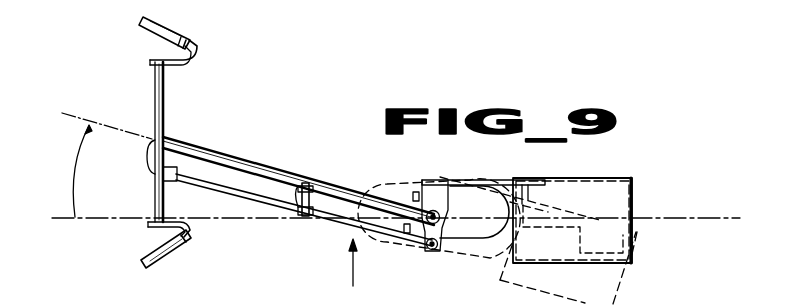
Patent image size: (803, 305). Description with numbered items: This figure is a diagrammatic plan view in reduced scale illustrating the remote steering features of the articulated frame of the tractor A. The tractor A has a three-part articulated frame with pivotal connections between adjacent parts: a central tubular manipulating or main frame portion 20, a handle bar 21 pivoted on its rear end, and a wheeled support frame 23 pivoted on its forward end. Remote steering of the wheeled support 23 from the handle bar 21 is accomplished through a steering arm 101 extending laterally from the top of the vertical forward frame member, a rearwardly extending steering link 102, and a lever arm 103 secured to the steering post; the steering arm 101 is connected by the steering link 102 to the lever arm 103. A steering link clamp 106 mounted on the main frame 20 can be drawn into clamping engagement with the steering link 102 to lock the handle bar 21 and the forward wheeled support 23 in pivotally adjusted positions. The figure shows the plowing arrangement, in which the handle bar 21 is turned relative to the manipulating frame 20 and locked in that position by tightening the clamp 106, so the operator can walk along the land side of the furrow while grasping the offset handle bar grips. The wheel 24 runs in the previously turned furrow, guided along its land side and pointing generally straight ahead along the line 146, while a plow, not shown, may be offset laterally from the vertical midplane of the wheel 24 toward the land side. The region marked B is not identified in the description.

The main frame portion 20 is at (217, 154).
The handle bar 21 is at (164, 100).
The wheeled support frame 23 is at (419, 184).
The wheel 24 is at (379, 246).
The steering arm 101 is at (441, 256).
The steering link 102 is at (336, 221).
The lever arm 103 is at (149, 157).
The steering link clamp 106 is at (303, 182).
The line 146 is at (672, 218).
The tractor A is at (347, 266).
The box B is at (636, 182).